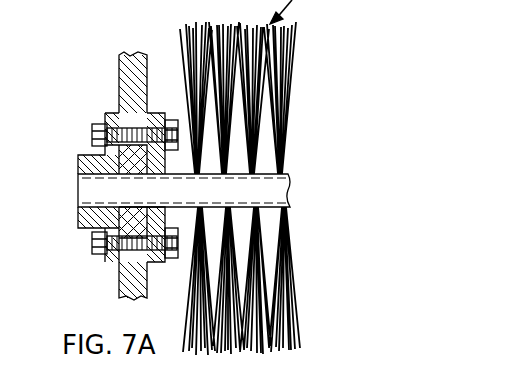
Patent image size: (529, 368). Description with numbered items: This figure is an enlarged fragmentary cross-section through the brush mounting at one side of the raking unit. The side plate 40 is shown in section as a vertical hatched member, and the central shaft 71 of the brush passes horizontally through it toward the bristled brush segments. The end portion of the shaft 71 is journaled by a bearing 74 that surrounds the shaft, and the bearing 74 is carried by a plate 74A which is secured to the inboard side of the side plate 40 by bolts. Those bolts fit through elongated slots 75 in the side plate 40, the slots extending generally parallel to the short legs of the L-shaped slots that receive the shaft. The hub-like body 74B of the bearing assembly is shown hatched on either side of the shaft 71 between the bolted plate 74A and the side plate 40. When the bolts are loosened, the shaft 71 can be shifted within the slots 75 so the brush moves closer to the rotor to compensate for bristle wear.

The side plate 40 is at (128, 86).
The central shaft 71 is at (262, 190).
The bearing 74 is at (88, 222).
The plate 74A is at (172, 150).
The hub body 74B is at (130, 170).
The elongated slot 75 is at (96, 136).